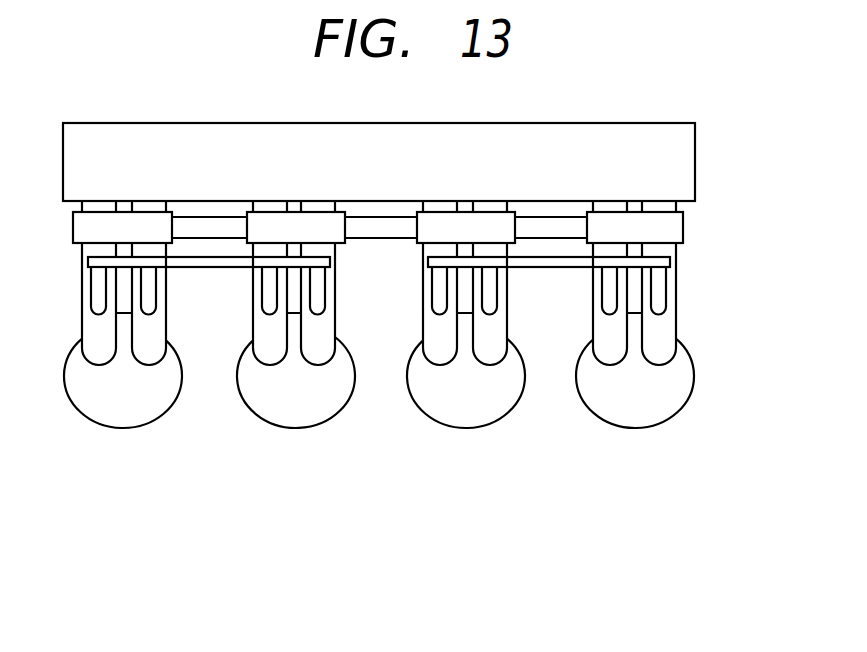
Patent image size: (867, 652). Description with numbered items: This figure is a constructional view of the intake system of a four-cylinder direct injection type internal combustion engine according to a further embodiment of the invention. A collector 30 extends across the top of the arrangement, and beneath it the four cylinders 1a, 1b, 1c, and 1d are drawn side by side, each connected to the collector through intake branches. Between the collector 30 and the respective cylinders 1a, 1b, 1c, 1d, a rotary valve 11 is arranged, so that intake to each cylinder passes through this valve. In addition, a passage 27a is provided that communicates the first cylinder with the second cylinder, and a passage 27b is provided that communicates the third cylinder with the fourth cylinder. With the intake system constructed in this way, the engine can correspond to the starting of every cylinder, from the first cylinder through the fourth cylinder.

The collector 30 is at (695, 150).
The rotary valve 11 is at (683, 226).
The passage 27a is at (207, 268).
The passage 27b is at (547, 268).
The cylinder 1a is at (160, 417).
The cylinder 1b is at (333, 415).
The cylinder 1c is at (503, 417).
The cylinder 1d is at (670, 415).